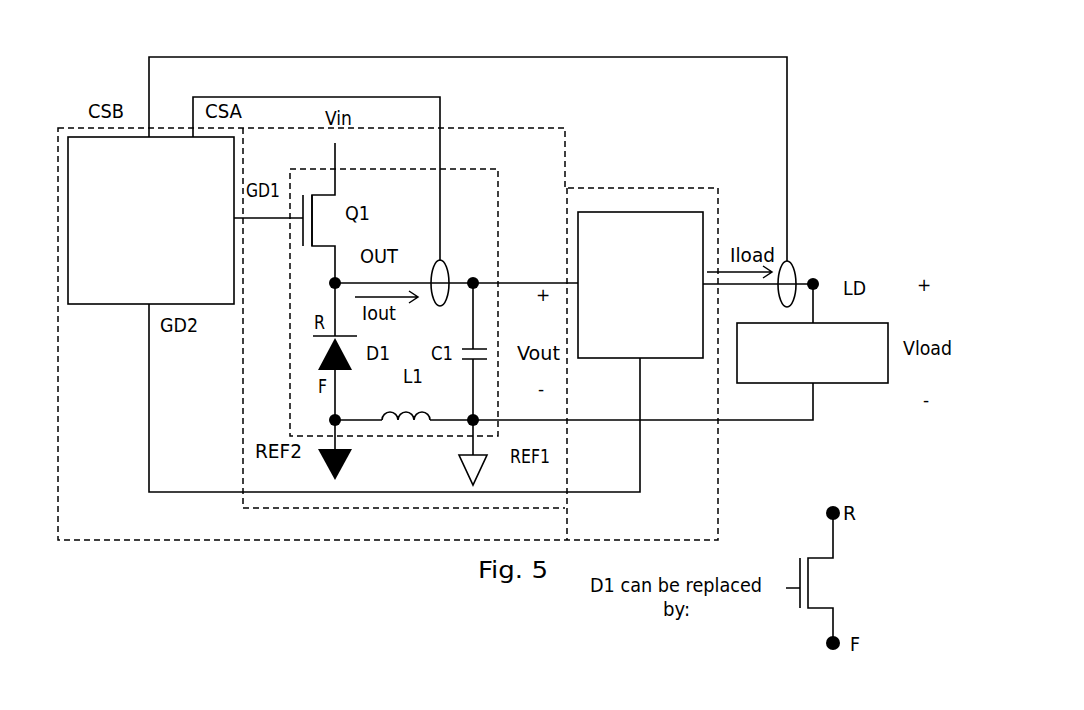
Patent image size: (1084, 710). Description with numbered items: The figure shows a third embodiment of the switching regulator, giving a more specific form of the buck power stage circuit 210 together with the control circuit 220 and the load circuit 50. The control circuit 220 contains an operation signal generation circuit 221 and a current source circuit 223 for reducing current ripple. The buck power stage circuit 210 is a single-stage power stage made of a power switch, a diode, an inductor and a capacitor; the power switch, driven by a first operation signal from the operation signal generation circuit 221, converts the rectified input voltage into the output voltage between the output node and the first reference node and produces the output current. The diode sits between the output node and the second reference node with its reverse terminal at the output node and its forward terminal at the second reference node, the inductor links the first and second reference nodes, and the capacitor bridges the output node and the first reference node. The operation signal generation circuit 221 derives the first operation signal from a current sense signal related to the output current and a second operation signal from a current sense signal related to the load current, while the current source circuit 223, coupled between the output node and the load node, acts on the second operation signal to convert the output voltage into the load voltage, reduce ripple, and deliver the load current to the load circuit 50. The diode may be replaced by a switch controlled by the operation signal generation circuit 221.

The control circuit 220 is at (115, 529).
The operation signal generation circuit 221 is at (108, 157).
The buck power stage circuit 210 is at (485, 195).
The current source circuit 223 is at (623, 352).
The load circuit 50 is at (838, 383).